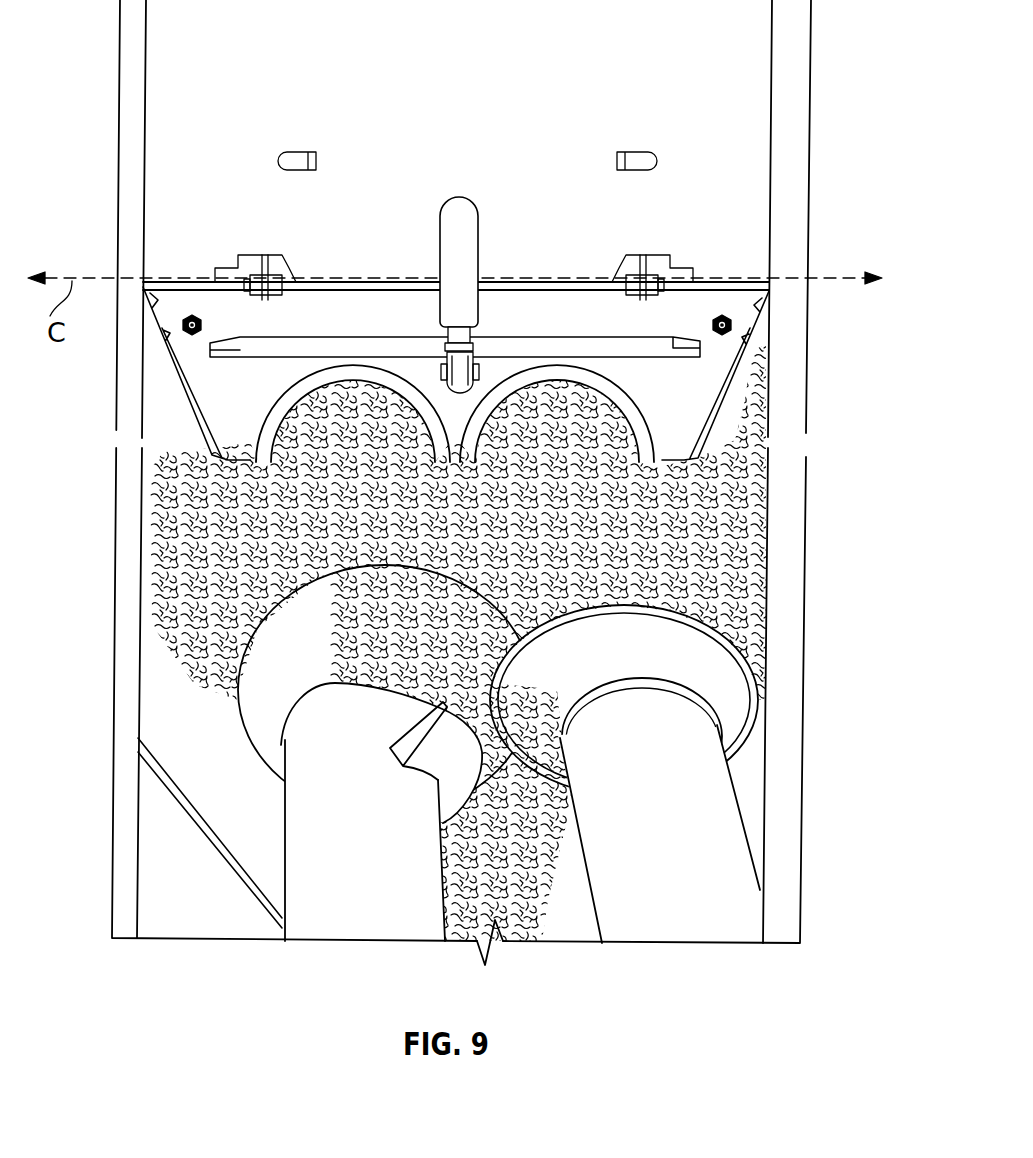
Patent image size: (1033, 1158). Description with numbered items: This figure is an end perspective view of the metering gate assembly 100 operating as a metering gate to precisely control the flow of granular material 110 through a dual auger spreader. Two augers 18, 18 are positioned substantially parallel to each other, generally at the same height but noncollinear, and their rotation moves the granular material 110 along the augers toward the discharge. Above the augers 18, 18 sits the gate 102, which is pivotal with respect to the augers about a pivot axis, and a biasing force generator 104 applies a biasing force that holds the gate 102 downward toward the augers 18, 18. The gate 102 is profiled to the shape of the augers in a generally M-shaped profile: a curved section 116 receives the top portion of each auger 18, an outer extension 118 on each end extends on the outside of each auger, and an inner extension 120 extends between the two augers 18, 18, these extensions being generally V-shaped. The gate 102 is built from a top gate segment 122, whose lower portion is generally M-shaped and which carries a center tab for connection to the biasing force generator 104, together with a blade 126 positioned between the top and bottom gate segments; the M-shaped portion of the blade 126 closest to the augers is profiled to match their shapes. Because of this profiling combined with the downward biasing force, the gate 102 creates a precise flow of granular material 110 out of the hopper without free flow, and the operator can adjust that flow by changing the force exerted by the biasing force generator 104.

The auger 18 is at (459, 671).
The metering gate assembly 100 is at (172, 193).
The gate 102 is at (300, 356).
The biasing force generator 104 is at (465, 238).
The granular material 110 is at (297, 503).
The curved section 116 is at (286, 393).
The outer extension 118 is at (272, 446).
The inner extension 120 is at (470, 440).
The top gate segment 122 is at (677, 383).
The blade 126 is at (210, 380).